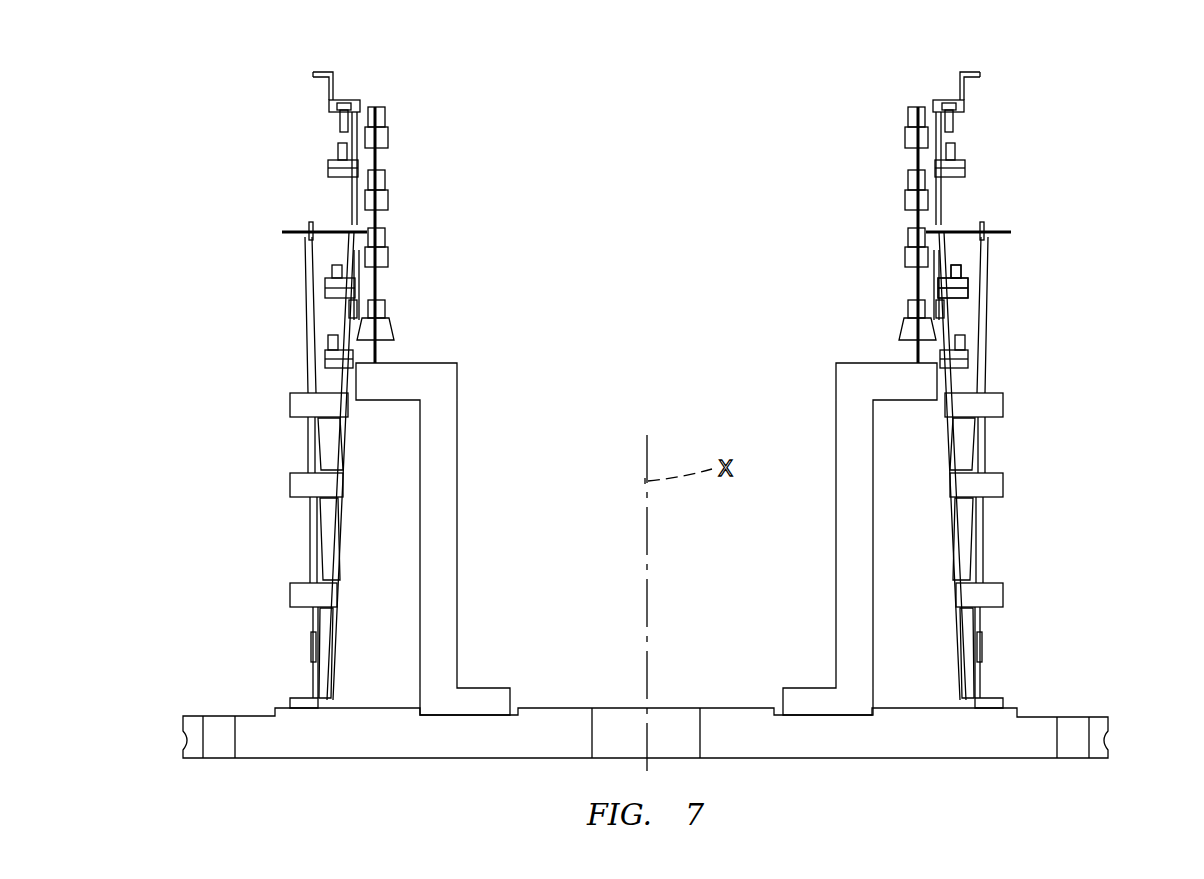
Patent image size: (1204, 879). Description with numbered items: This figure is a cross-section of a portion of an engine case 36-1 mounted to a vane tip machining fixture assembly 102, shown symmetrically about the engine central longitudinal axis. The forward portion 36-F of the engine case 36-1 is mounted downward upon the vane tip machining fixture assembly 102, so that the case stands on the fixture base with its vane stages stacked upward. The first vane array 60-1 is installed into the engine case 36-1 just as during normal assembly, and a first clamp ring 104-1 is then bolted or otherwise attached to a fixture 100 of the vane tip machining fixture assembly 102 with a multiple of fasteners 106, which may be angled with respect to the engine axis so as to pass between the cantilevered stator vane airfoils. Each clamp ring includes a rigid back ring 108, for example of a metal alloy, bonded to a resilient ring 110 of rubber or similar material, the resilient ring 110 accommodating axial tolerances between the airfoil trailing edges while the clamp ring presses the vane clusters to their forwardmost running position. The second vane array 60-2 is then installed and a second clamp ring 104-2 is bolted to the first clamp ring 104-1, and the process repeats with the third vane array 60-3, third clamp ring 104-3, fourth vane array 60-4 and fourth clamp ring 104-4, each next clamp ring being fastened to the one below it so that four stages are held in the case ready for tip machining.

The engine case 36-1 is at (976, 162).
The forward portion of the engine case 36-F is at (995, 645).
The first vane array 60-1 is at (903, 330).
The second vane array 60-2 is at (905, 265).
The third vane array 60-3 is at (910, 202).
The fourth vane array 60-4 is at (910, 138).
The fixture 100 is at (822, 623).
The vane tip machining fixture assembly 102 is at (1114, 738).
The first clamp ring 104-1 is at (902, 304).
The second clamp ring 104-2 is at (902, 229).
The third clamp ring 104-3 is at (909, 172).
The fourth clamp ring 104-4 is at (912, 105).
The fasteners 106 is at (933, 153).
The rigid back ring 108 is at (947, 292).
The resilient ring 110 is at (937, 313).